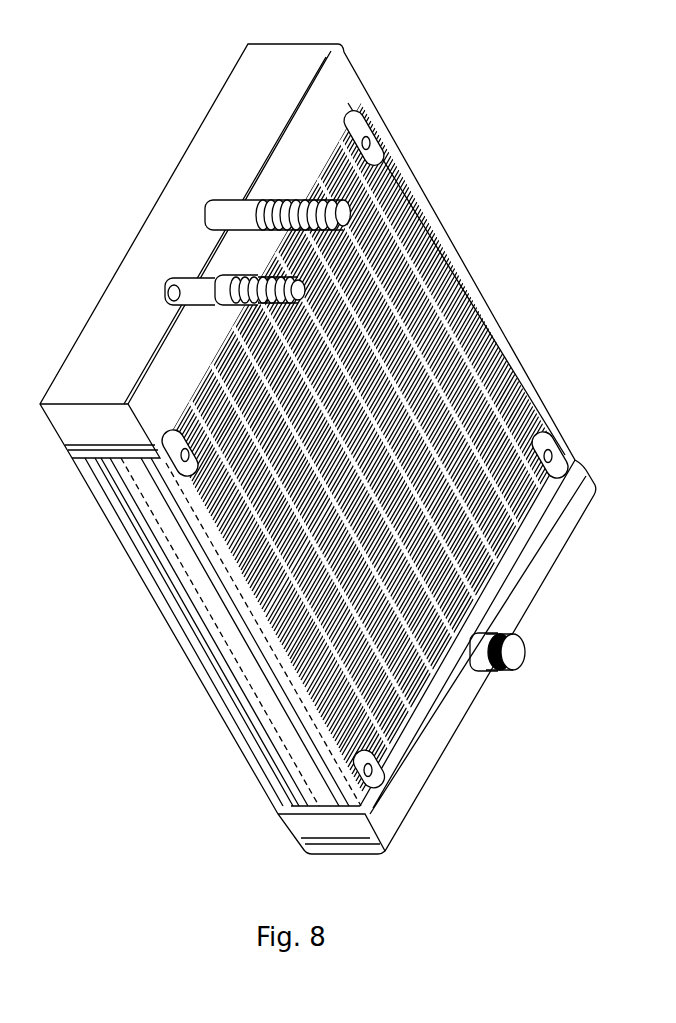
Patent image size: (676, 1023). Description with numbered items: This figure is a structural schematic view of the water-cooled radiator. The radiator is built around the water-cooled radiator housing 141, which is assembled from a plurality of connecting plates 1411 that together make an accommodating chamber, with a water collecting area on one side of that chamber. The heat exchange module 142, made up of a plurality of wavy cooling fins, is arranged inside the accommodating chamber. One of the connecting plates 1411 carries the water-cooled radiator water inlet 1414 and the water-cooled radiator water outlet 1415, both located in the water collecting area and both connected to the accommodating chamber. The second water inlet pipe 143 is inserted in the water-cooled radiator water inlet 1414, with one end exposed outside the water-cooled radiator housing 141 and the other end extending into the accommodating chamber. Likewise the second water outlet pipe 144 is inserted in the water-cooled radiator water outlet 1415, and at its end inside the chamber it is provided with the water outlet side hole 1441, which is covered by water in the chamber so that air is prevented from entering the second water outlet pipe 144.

The water-cooled radiator housing 141 is at (160, 642).
The connecting plate 1411 is at (275, 738).
The heat exchange module 142 is at (422, 680).
The second water inlet pipe 143 is at (250, 173).
The second water outlet pipe 144 is at (197, 230).
The water-cooled radiator water inlet 1414 is at (233, 177).
The water-cooled radiator water outlet 1415 is at (200, 252).
The water outlet side hole 1441 is at (153, 288).